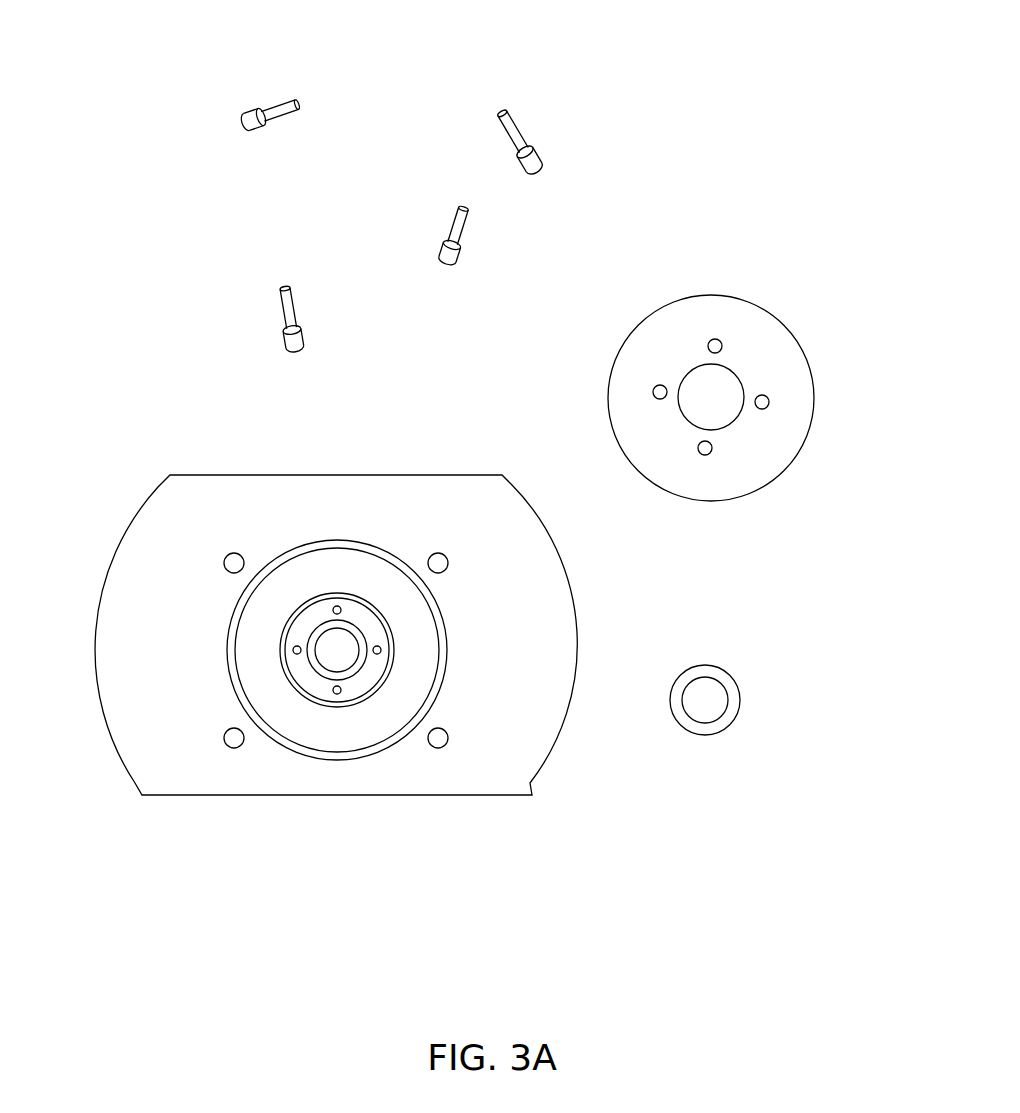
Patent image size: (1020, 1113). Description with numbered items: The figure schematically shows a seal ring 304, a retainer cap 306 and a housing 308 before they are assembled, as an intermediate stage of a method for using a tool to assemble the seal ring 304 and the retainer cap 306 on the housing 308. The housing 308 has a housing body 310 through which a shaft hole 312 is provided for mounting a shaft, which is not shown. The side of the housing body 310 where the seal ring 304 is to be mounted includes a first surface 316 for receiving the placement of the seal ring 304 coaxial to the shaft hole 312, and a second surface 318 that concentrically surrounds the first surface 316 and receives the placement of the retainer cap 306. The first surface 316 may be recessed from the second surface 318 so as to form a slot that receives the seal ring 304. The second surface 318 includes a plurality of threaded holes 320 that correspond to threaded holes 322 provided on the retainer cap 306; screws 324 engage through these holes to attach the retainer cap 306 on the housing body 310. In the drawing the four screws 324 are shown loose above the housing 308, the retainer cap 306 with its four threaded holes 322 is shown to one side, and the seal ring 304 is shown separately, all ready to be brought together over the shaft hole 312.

The seal ring 304 is at (750, 668).
The retainer cap 306 is at (800, 300).
The housing 308 is at (140, 480).
The housing body 310 is at (215, 508).
The shaft hole 312 is at (350, 634).
The first surface 316 is at (317, 668).
The second surface 318 is at (398, 688).
The threaded holes 320 is at (338, 605).
The threaded holes 322 is at (713, 338).
The screws 324 is at (270, 110).